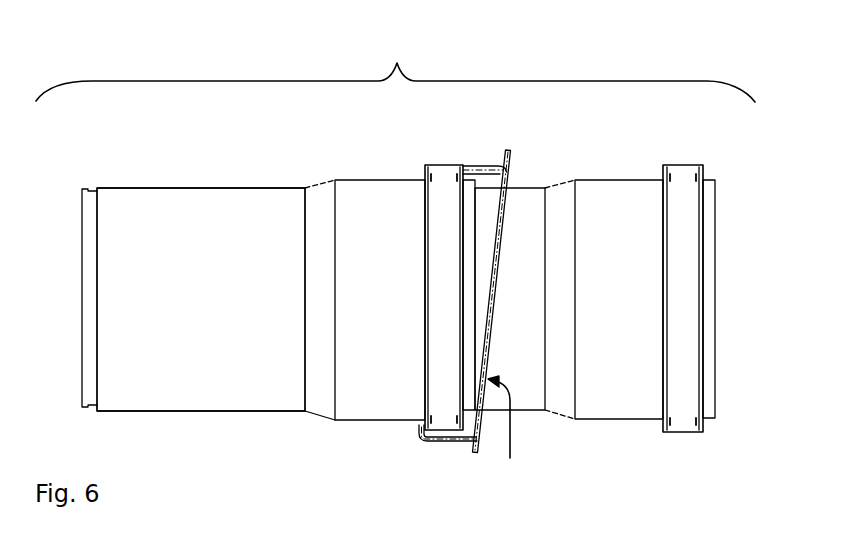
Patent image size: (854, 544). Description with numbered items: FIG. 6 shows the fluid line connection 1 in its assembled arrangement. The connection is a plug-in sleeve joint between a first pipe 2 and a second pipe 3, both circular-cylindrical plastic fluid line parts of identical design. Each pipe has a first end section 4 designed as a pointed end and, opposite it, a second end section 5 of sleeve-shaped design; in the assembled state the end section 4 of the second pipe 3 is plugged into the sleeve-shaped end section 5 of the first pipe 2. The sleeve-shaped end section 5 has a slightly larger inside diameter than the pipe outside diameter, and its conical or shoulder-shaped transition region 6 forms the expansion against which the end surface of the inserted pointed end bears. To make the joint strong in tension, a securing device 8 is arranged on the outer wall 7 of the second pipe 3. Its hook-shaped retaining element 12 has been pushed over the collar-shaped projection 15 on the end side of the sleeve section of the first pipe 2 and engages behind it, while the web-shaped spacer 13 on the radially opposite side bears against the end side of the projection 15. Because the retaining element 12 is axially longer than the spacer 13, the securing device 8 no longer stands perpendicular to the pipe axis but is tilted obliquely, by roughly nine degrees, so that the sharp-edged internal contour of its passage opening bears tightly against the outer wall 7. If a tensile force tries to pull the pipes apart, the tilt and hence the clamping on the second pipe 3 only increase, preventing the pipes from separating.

The fluid line connection 1 is at (395, 65).
The first pipe 2 is at (234, 400).
The second pipe 3 is at (619, 407).
The first end section 4 is at (88, 190).
The second end section 5 is at (360, 160).
The transition region 6 is at (322, 407).
The outer wall 7 is at (173, 357).
The securing device 8 is at (503, 454).
The retaining element 12 is at (457, 443).
The spacer 13 is at (483, 167).
The projection 15 is at (437, 422).